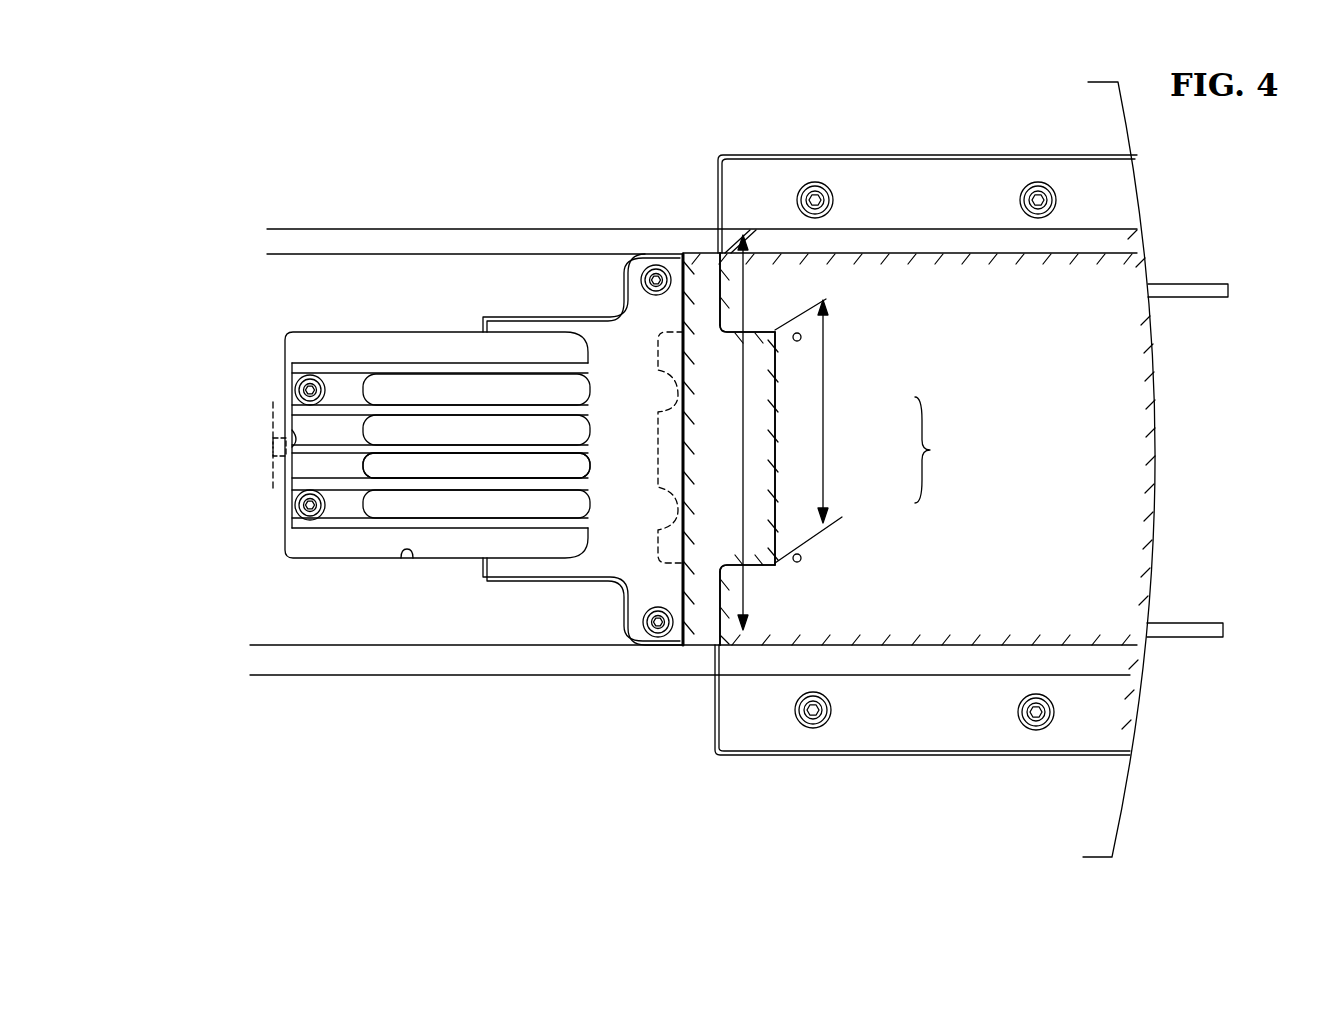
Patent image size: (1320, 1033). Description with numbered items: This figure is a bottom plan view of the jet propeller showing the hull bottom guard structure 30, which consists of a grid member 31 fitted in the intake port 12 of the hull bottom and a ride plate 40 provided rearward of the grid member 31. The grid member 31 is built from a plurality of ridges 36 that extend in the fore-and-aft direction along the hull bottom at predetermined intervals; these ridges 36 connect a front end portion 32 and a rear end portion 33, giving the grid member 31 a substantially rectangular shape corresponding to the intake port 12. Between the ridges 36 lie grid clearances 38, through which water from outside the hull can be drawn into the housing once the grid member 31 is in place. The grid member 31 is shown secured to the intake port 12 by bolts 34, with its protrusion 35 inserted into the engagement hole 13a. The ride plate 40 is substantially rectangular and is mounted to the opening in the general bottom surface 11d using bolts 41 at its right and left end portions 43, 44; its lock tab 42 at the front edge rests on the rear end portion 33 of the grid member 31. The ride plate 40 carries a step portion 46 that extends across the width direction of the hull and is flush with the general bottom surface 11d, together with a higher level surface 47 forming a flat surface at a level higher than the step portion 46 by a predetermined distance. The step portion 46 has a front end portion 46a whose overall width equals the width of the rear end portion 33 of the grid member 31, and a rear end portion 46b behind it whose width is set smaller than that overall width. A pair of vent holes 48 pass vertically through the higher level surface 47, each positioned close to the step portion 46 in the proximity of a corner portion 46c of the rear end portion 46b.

The general bottom surface 11d is at (362, 278).
The intake port 12 is at (404, 558).
The engagement hole 13a is at (276, 455).
The hull bottom guard structure 30 is at (661, 138).
The grid member 31 is at (537, 312).
The front end portion 32 is at (313, 560).
The rear end portion 33 is at (663, 580).
The bolts 34 is at (651, 268).
The protrusion 35 is at (268, 437).
The ridges 36 is at (483, 484).
The grid clearances 38 is at (445, 425).
The ride plate 40 is at (893, 146).
The bolts 41 is at (813, 196).
The lock tab 42 is at (640, 528).
The right end portion 43 is at (960, 170).
The left end portion 44 is at (935, 725).
The step portion 46 is at (840, 449).
The front end portion 46a is at (707, 535).
The rear end portion 46b is at (757, 421).
The corner portion 46c is at (773, 328).
The higher level surface 47 is at (1102, 415).
The vent holes 48 is at (803, 337).